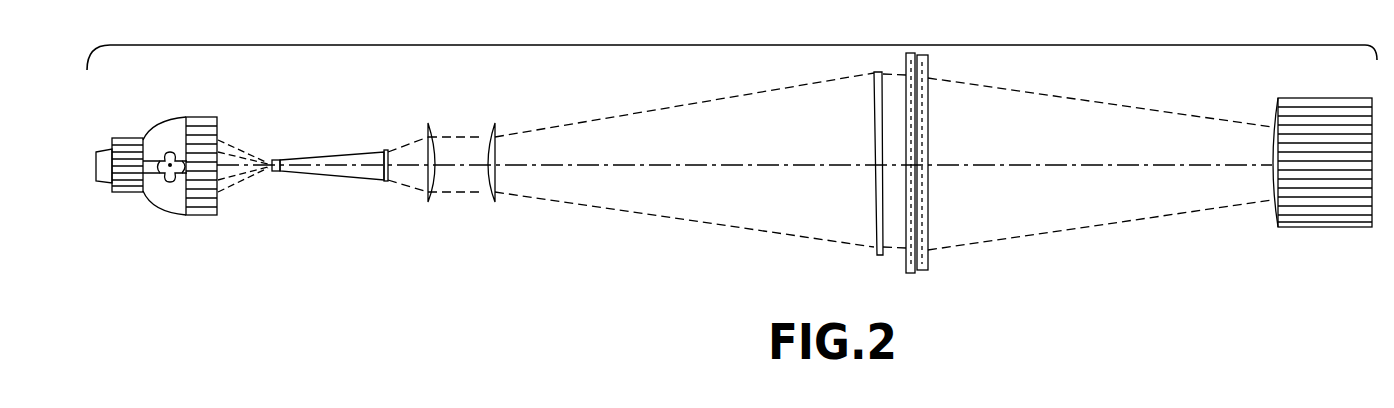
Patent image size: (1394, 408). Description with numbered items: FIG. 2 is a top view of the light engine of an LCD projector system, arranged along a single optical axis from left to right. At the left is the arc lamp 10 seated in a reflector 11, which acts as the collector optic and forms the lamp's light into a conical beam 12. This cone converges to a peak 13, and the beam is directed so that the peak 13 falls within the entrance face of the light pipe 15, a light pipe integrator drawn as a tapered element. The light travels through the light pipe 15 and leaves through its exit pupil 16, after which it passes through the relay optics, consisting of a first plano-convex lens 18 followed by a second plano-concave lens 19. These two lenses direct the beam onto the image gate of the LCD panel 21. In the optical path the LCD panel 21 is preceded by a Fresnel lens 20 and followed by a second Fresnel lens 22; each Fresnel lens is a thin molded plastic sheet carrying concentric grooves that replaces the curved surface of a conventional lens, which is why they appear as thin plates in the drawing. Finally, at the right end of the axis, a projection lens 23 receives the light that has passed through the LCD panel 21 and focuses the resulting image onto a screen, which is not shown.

The arc lamp 10 is at (168, 183).
The reflector 11 is at (172, 122).
The conical beam 12 is at (240, 187).
The peak 13 is at (282, 171).
The light pipe 15 is at (370, 153).
The exit pupil 16 is at (393, 175).
The first plano-convex lens 18 is at (430, 195).
The second plano-concave lens 19 is at (495, 197).
The Fresnel lens 20 is at (874, 222).
The LCD panel 21 is at (913, 273).
The second Fresnel lens 22 is at (931, 210).
The projection lens 23 is at (1317, 227).